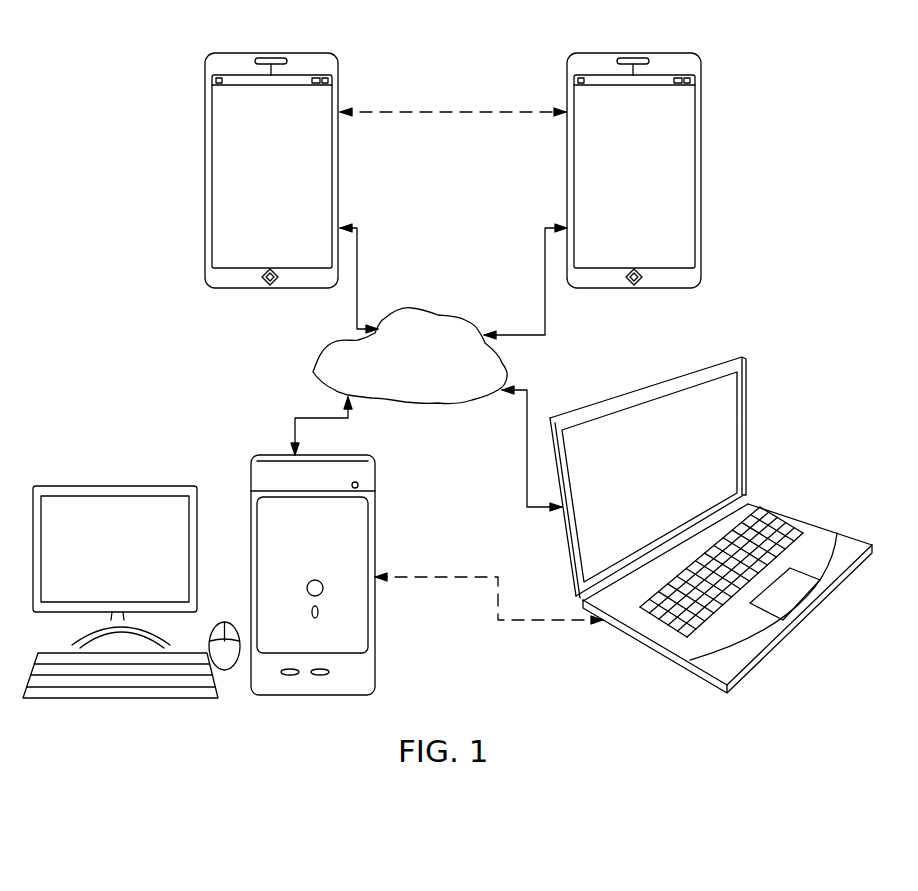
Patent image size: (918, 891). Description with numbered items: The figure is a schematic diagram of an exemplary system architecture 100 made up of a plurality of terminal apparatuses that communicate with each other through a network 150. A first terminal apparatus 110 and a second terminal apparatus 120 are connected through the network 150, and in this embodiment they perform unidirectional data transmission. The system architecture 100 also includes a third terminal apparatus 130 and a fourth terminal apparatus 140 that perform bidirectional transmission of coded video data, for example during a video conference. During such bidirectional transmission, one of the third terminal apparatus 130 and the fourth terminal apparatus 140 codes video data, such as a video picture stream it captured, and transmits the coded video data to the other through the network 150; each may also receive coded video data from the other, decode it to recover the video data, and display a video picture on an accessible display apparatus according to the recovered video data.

The system architecture 100 is at (795, 45).
The first terminal apparatus 110 is at (745, 412).
The second terminal apparatus 120 is at (378, 533).
The third terminal apparatus 130 is at (203, 193).
The fourth terminal apparatus 140 is at (703, 203).
The network 150 is at (410, 356).